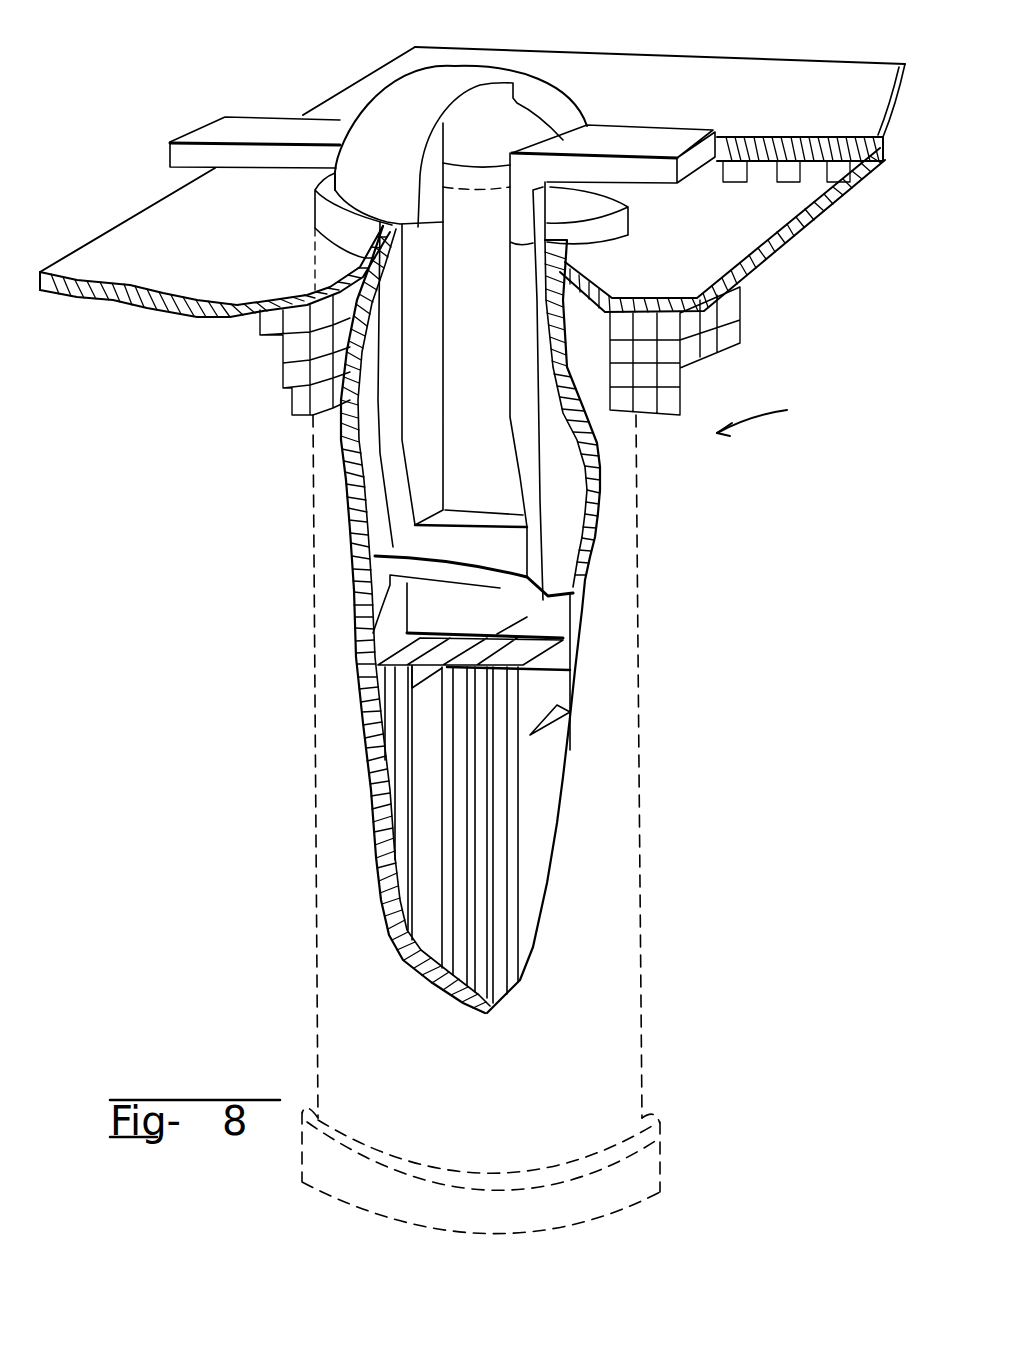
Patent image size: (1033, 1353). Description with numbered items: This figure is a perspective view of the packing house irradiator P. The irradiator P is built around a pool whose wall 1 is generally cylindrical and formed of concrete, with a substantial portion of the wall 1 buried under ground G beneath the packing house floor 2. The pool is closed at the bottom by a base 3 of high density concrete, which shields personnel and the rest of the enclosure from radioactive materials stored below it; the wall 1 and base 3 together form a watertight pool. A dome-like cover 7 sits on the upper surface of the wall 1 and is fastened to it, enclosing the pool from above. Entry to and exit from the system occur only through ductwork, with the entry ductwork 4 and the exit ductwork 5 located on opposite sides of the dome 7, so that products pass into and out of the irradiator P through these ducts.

The pool wall 1 is at (603, 481).
The packing house floor 2 is at (770, 227).
The base 3 is at (650, 1160).
The entry ductwork 4 is at (633, 135).
The exit ductwork 5 is at (247, 128).
The dome-like cover 7 is at (543, 103).
The ground G is at (735, 325).
The packing house irradiator P is at (765, 410).